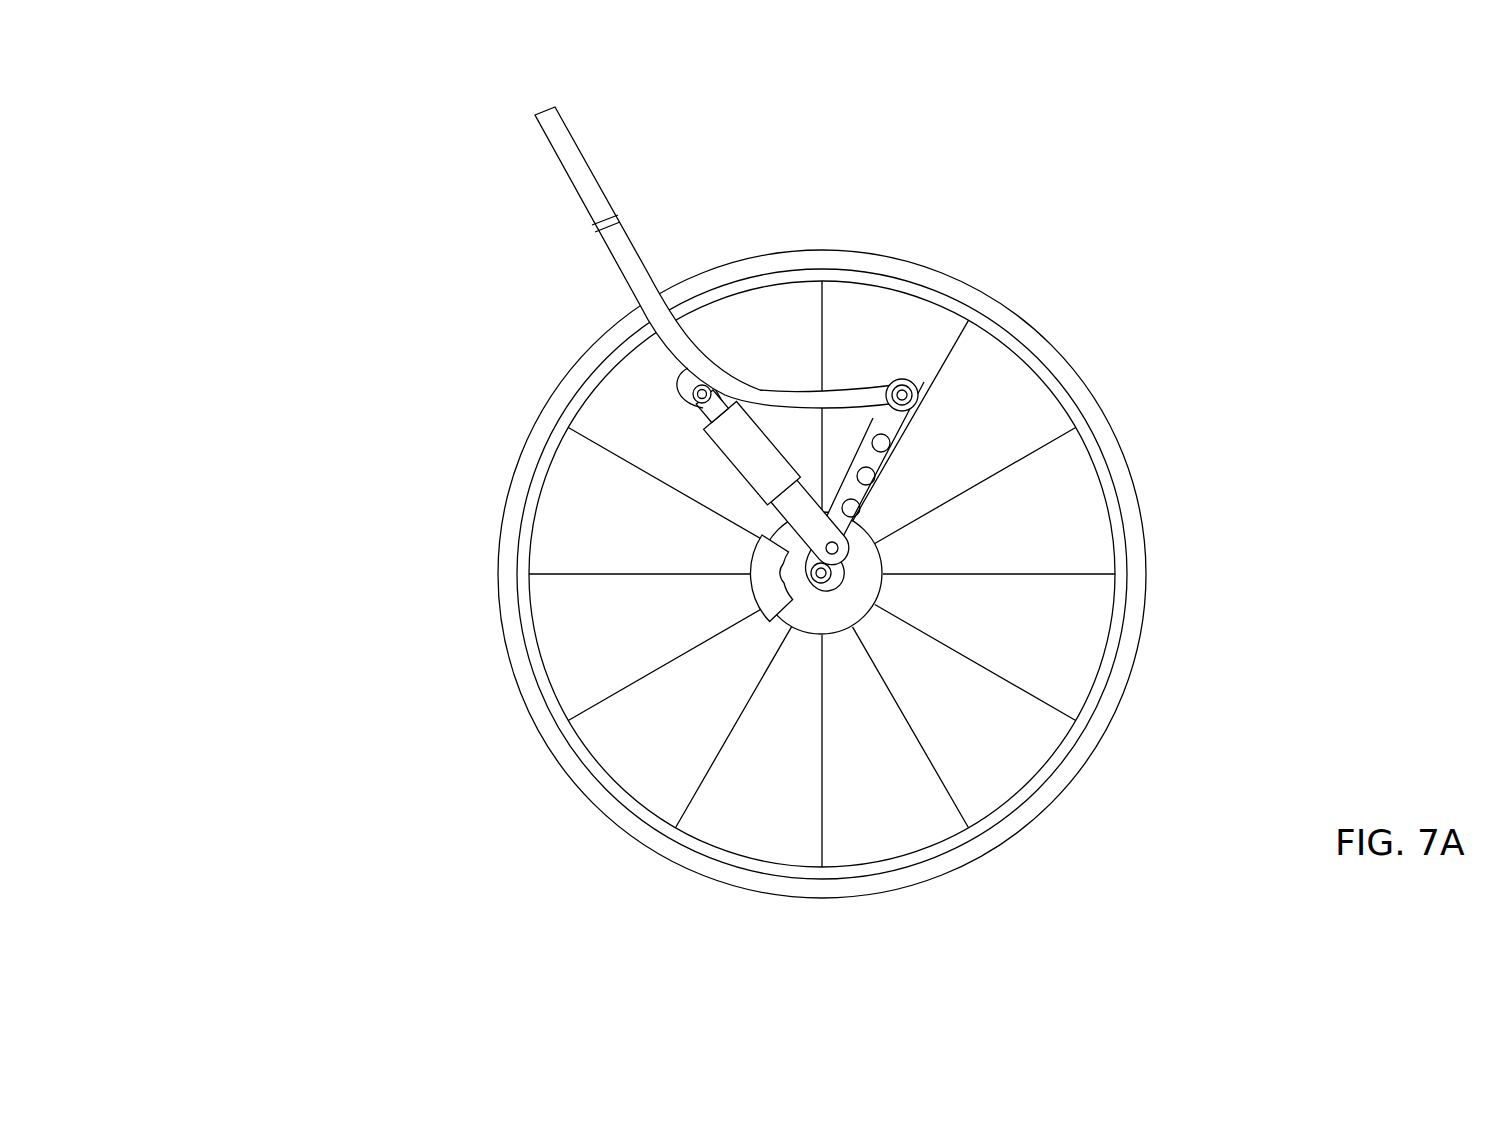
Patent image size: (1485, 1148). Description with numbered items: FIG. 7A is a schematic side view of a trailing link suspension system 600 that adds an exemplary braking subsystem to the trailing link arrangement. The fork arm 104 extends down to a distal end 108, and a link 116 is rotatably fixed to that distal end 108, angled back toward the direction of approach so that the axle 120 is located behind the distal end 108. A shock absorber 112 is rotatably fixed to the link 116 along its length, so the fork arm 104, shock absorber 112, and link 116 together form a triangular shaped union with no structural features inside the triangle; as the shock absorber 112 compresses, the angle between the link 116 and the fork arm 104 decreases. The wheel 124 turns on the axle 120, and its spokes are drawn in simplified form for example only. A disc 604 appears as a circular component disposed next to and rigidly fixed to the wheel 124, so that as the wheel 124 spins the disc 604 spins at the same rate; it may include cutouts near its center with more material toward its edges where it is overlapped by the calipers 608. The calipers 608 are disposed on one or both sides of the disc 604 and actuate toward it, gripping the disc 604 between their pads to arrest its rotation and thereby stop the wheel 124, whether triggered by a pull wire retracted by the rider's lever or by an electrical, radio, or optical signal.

The suspension system 600 is at (200, 226).
The fork arm 104 is at (628, 250).
The distal end 108 is at (915, 382).
The shock absorber 112 is at (752, 437).
The link 116 is at (862, 493).
The axle 120 is at (833, 569).
The wheel 124 is at (1048, 786).
The disc 604 is at (800, 618).
The calipers 608 is at (760, 564).